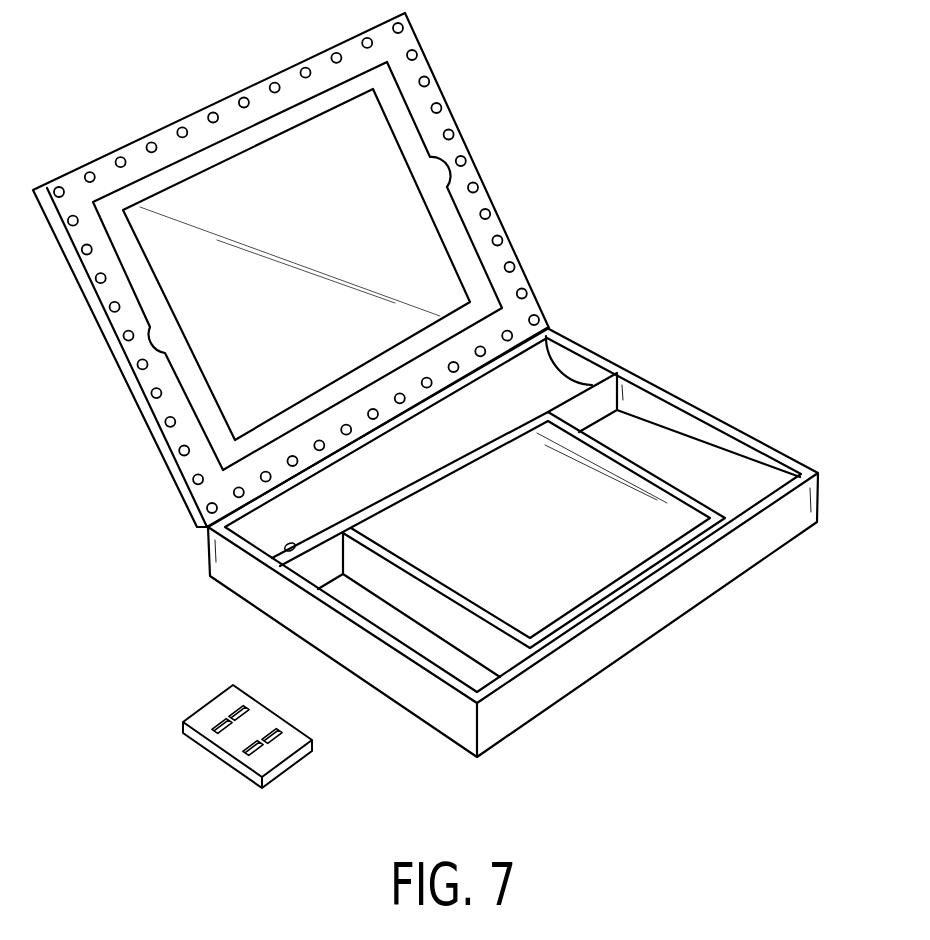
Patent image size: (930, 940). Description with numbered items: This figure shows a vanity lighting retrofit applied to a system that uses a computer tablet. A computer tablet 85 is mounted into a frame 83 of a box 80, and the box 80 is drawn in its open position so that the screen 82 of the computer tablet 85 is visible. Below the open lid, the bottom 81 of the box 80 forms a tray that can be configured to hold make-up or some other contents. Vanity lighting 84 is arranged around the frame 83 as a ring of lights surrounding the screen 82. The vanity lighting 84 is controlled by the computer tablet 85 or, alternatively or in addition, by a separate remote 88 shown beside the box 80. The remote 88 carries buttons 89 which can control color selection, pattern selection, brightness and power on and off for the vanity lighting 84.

The box 80 is at (429, 385).
The bottom 81 is at (777, 550).
The screen 82 is at (339, 200).
The frame 83 is at (80, 167).
The vanity lighting 84 is at (332, 47).
The computer tablet 85 is at (165, 180).
The remote 88 is at (243, 724).
The buttons 89 is at (236, 706).